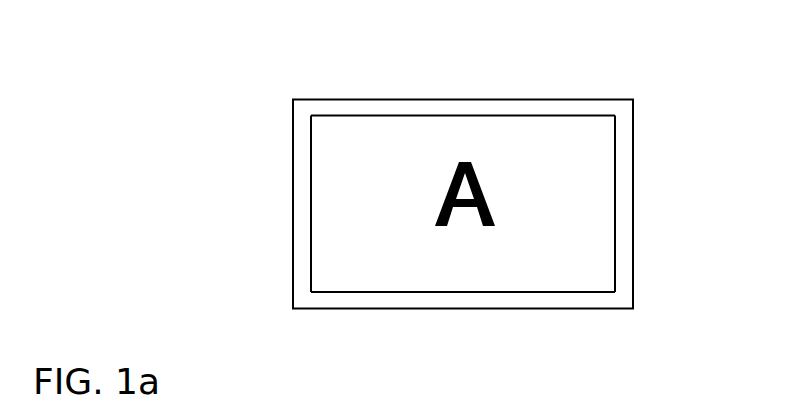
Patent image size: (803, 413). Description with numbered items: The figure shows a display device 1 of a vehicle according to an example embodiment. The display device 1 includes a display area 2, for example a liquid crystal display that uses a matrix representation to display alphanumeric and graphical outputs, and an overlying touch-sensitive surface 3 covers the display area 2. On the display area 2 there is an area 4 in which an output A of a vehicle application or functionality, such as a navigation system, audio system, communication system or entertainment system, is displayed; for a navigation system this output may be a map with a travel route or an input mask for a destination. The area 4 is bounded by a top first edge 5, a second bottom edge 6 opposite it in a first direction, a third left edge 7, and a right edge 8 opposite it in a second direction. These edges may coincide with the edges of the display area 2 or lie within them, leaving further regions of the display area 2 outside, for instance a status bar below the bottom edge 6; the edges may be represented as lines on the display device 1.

The display device 1 is at (632, 112).
The display area 2 is at (587, 178).
The touch-sensitive surface 3 is at (382, 136).
The area 4 is at (590, 259).
The top first edge 5 is at (557, 115).
The second bottom edge 6 is at (536, 292).
The third left edge 7 is at (311, 233).
The right edge 8 is at (614, 217).